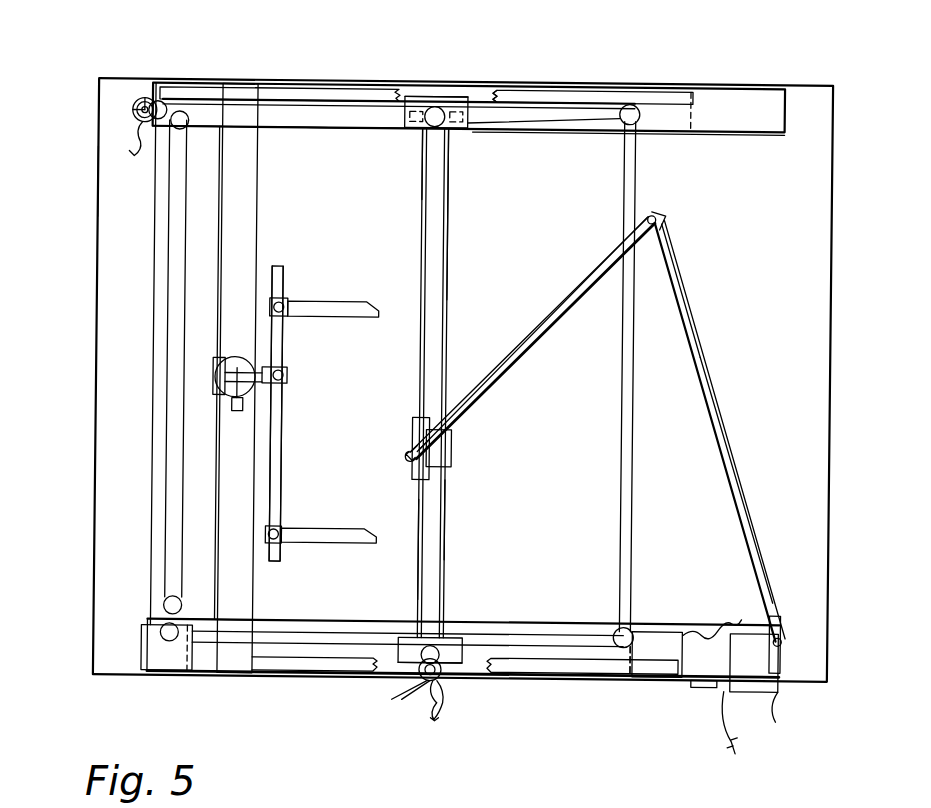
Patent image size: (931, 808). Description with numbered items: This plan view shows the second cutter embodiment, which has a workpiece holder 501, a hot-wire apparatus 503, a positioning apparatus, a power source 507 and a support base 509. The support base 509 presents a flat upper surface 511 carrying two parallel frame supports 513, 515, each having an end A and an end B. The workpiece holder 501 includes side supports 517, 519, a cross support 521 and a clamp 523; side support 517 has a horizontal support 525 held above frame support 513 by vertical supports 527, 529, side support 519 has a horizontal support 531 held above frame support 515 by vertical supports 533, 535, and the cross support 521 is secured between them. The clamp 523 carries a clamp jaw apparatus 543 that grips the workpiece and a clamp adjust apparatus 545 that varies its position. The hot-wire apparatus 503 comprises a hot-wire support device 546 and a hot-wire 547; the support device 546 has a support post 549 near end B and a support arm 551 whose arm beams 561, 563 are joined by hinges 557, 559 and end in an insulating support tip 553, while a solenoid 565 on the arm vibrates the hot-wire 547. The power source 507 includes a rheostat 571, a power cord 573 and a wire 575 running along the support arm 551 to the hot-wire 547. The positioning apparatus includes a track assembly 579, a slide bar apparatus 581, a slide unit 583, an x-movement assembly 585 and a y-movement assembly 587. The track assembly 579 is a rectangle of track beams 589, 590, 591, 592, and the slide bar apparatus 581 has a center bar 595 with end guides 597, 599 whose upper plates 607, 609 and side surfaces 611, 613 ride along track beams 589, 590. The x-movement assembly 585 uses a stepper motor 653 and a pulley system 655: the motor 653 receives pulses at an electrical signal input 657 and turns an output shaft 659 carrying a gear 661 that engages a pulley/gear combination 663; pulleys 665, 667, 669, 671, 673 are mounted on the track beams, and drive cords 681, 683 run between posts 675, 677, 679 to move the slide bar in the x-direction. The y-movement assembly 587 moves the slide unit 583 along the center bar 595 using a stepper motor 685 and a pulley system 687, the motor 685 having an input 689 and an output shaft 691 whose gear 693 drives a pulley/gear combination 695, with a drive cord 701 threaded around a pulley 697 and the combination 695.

The workpiece holder 501 is at (323, 280).
The hot-wire apparatus 503 is at (566, 272).
The power source 507 is at (680, 690).
The support base 509 is at (748, 84).
The upper surface 511 is at (576, 392).
The frame support 513 is at (702, 89).
The frame support 515 is at (275, 652).
The side support 517 is at (342, 100).
The side support 519 is at (312, 662).
The cross support 521 is at (252, 220).
The clamp 523 is at (353, 301).
The horizontal support 525 is at (516, 90).
The vertical support 527 is at (215, 84).
The vertical support 529 is at (590, 105).
The horizontal support 531 is at (528, 668).
The vertical support 533 is at (150, 664).
The vertical support 535 is at (625, 670).
The clamp jaw apparatus 543 is at (328, 319).
The clamp adjust apparatus 545 is at (232, 358).
The hot-wire support device 546 is at (705, 300).
The hot-wire 547 is at (411, 450).
The support post 549 is at (772, 700).
The support arm 551 is at (722, 366).
The support tip 553 is at (405, 459).
The hinge 557 is at (782, 640).
The hinge 559 is at (661, 220).
The arm beam 561 is at (690, 244).
The arm beam 563 is at (548, 306).
The solenoid 565 is at (416, 433).
The rheostat 571 is at (682, 630).
The power cord 573 is at (728, 760).
The wire 575 is at (748, 620).
The track assembly 579 is at (486, 88).
The slide bar apparatus 581 is at (450, 205).
The slide unit 583 is at (458, 445).
The x-movement assembly 585 is at (291, 90).
The y-movement assembly 587 is at (450, 522).
The track beam 589 is at (560, 86).
The track beam 590 is at (548, 630).
The track beam 591 is at (155, 412).
The track beam 592 is at (636, 441).
The center bar 595 is at (423, 190).
The end guide 597 is at (428, 96).
The end guide 599 is at (407, 668).
The upper plate 607 is at (456, 96).
The upper plate 609 is at (436, 644).
The side surface 611 is at (408, 96).
The side surface 613 is at (447, 666).
The stepper motor 653 is at (138, 103).
The pulley system 655 is at (95, 183).
The electrical signal input 657 is at (133, 122).
The output shaft 659 is at (135, 105).
The gear 661 is at (135, 113).
The pulley/gear combination 663 is at (160, 103).
The pulley 665 is at (640, 117).
The pulley 667 is at (185, 128).
The pulley 669 is at (628, 638).
The pulley 671 is at (150, 640).
The pulley 673 is at (186, 604).
The post 675 is at (472, 135).
The post 677 is at (405, 122).
The post 679 is at (443, 655).
The drive cord 681 is at (284, 115).
The drive cord 683 is at (611, 116).
The stepper motor 685 is at (442, 690).
The pulley system 687 is at (450, 492).
The input 689 is at (440, 722).
The output shaft 691 is at (432, 682).
The gear 693 is at (414, 668).
The pulley/gear combination 695 is at (430, 648).
The pulley 697 is at (445, 125).
The drive cord 701 is at (448, 301).
The end A is at (150, 80).
The end B is at (790, 108).